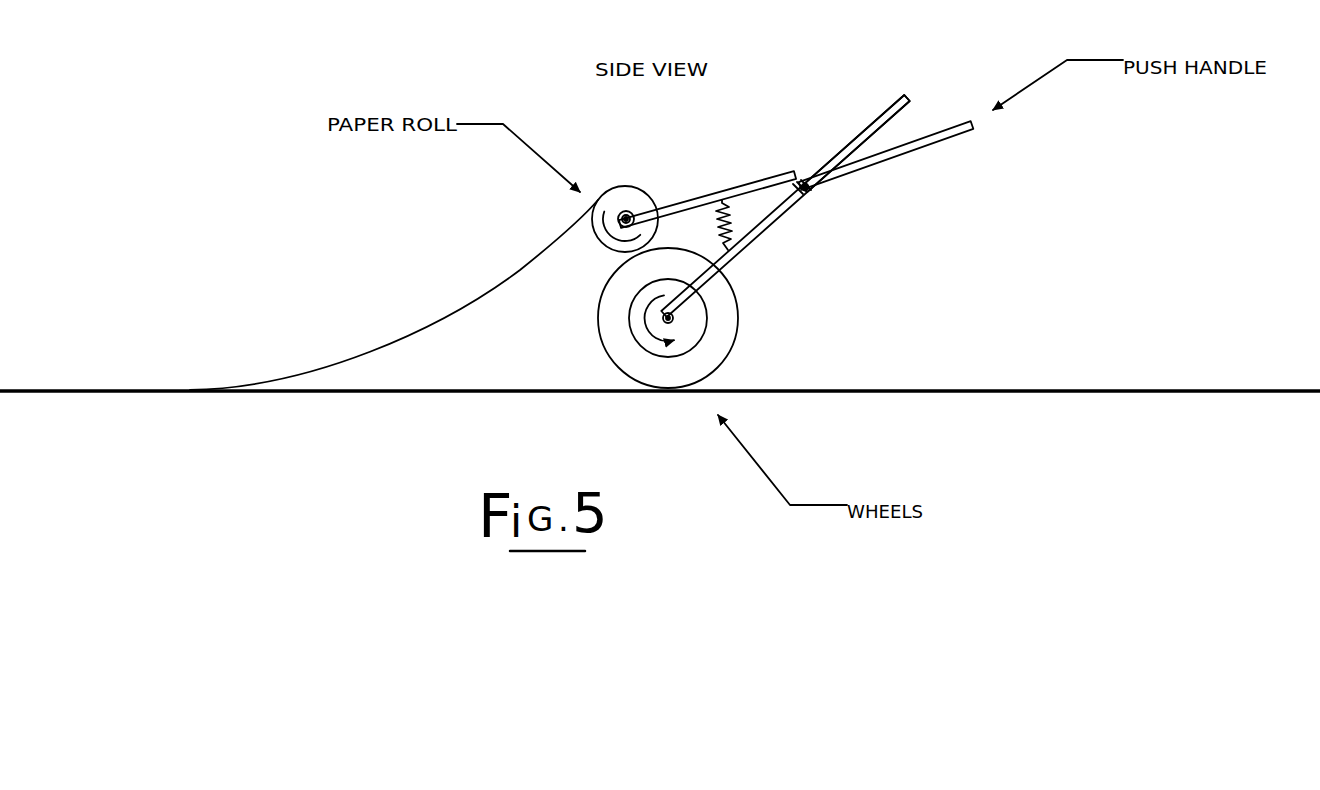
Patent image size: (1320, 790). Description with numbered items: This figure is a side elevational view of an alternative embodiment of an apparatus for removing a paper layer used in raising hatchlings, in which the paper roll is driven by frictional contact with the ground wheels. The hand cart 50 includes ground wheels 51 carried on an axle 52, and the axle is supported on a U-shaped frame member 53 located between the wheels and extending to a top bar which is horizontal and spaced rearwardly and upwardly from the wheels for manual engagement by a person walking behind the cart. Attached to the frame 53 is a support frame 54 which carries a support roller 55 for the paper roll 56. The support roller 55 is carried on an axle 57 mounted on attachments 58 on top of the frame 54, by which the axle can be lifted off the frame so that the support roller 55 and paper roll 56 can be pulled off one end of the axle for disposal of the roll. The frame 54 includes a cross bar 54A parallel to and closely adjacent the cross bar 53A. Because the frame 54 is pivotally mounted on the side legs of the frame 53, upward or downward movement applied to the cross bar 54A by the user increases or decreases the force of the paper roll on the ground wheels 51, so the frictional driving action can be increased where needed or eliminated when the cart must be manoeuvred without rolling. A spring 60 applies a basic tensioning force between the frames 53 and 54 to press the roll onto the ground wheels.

The hand cart 50 is at (831, 222).
The ground wheels 51 is at (720, 333).
The axle 52 is at (671, 323).
The U-shaped frame member 53 is at (770, 228).
The cross bar 53A is at (910, 95).
The support frame 54 is at (753, 178).
The cross bar 54A is at (975, 124).
The support roller 55 is at (630, 207).
The paper roll 56 is at (628, 208).
The axle 57 is at (603, 237).
The attachments 58 is at (636, 216).
The spring 60 is at (726, 198).